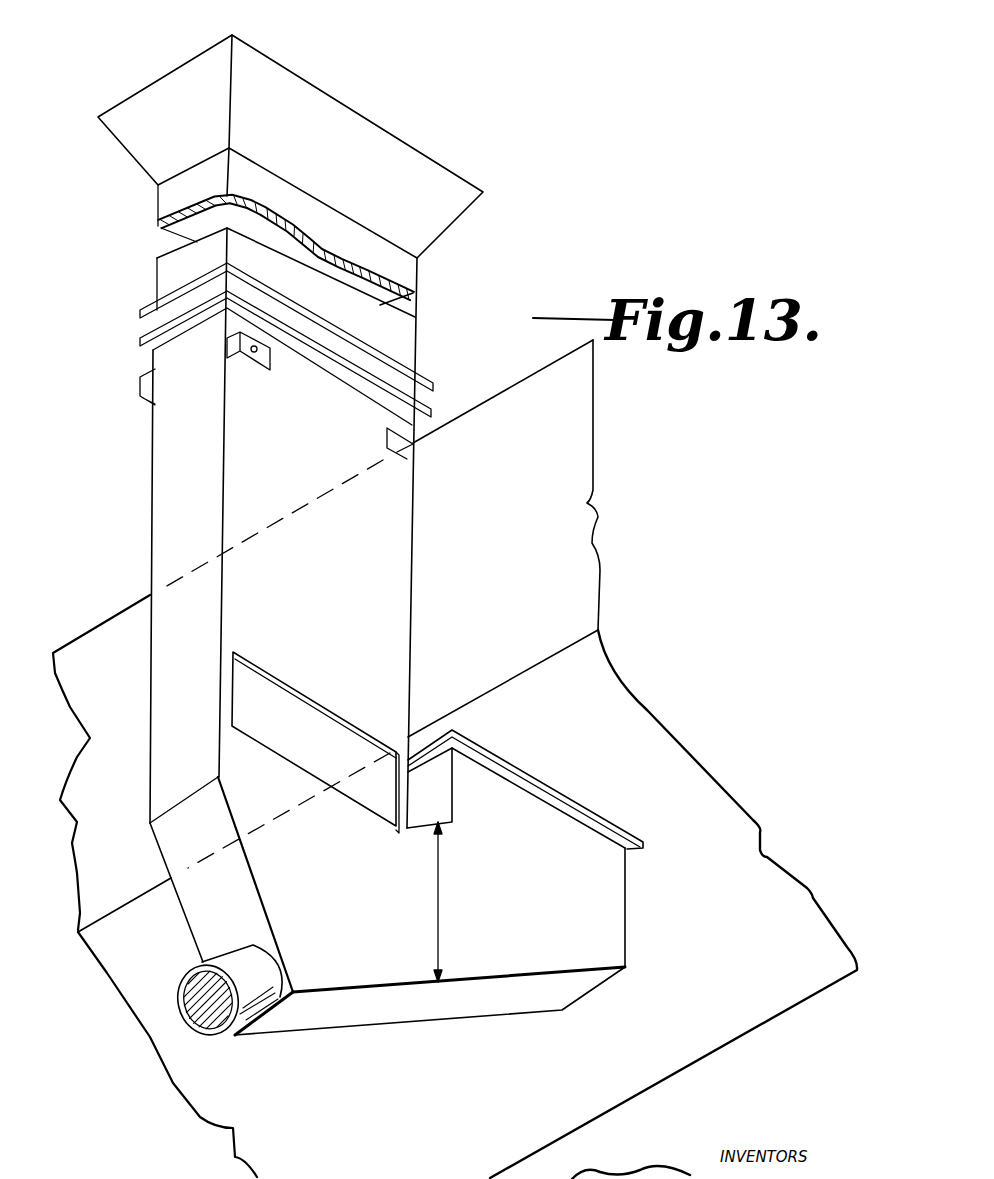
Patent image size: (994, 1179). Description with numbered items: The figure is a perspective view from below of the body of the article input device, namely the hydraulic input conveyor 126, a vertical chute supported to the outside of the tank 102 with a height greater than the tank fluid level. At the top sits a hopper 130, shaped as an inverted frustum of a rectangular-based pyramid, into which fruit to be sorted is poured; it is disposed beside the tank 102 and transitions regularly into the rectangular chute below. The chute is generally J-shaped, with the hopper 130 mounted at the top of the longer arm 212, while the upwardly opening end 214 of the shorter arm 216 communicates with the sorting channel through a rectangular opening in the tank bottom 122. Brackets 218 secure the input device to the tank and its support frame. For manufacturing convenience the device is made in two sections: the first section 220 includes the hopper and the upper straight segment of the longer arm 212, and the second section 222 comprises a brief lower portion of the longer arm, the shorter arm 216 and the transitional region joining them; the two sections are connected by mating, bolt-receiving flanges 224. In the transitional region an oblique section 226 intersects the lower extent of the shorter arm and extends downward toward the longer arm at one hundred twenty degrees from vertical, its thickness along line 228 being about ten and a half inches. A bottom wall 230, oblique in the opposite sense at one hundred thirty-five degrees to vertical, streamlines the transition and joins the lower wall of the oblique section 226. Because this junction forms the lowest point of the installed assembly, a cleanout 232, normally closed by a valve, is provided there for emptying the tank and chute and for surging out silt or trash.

The tank 102 is at (647, 712).
The tank bottom 122 is at (527, 1110).
The hydraulic input conveyor 126 is at (148, 480).
The hopper 130 is at (440, 222).
The longer arm 212 is at (290, 487).
The upwardly opening end 214 is at (583, 810).
The shorter arm 216 is at (613, 884).
The brackets 218 is at (143, 390).
The first section 220 is at (408, 279).
The second section 222 is at (173, 574).
The bolt-receiving flanges 224 is at (435, 390).
The oblique section 226 is at (408, 973).
The thickness line 228 is at (440, 913).
The bottom wall 230 is at (248, 908).
The cleanout 232 is at (263, 972).